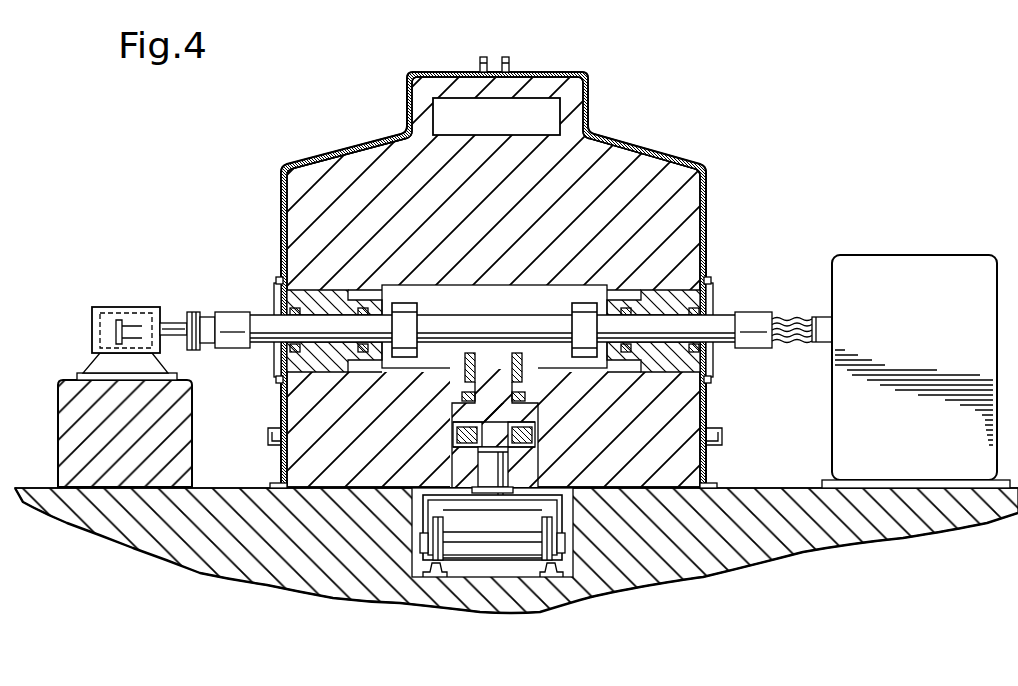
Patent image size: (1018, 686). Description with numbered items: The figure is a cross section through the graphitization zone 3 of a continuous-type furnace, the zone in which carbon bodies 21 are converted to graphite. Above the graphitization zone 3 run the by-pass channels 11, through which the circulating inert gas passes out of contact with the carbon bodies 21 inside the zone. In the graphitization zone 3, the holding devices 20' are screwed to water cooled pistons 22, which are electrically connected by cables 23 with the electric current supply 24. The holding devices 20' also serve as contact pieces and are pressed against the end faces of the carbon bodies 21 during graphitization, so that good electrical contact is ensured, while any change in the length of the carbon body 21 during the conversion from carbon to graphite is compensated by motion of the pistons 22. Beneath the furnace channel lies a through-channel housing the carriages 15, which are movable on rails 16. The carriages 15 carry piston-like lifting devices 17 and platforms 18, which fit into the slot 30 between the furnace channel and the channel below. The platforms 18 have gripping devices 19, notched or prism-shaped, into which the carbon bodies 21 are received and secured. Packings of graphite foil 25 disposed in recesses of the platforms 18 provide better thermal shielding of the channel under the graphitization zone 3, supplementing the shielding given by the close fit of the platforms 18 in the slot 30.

The graphitization zone 3 is at (491, 287).
The by-pass channels 11 is at (552, 111).
The carriages 15 is at (560, 556).
The rails 16 is at (552, 564).
The piston-like lifting devices 17 is at (496, 473).
The platforms 18 is at (492, 380).
The gripping devices 19 is at (523, 360).
The holding devices 20' is at (498, 298).
The carbon bodies 21 is at (428, 296).
The water cooled pistons 22 is at (262, 318).
The cables 23 is at (791, 318).
The electric current supply 24 is at (840, 414).
The packings of graphite foil 25 is at (461, 395).
The slot 30 is at (454, 457).